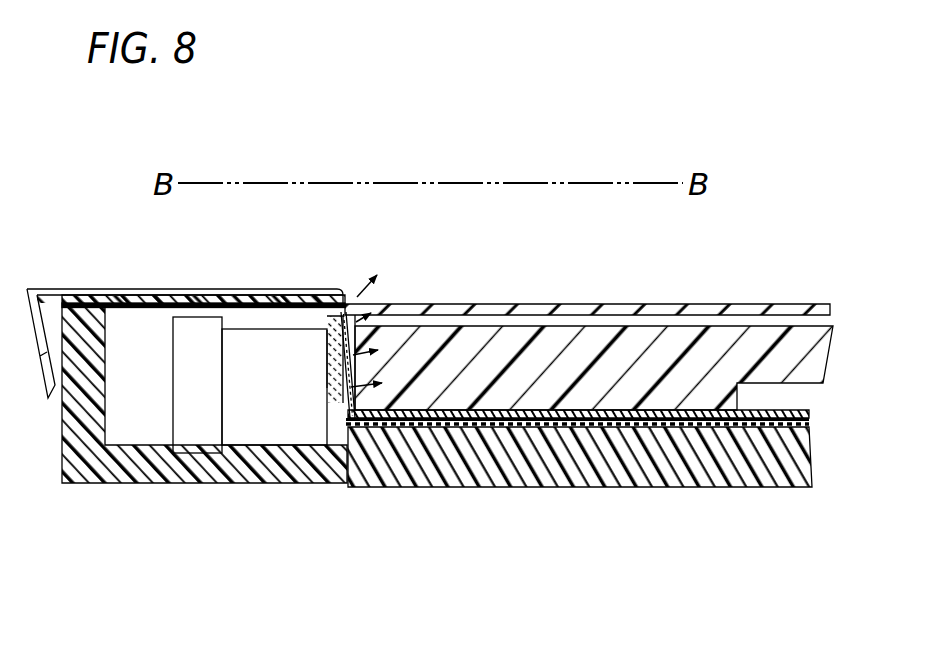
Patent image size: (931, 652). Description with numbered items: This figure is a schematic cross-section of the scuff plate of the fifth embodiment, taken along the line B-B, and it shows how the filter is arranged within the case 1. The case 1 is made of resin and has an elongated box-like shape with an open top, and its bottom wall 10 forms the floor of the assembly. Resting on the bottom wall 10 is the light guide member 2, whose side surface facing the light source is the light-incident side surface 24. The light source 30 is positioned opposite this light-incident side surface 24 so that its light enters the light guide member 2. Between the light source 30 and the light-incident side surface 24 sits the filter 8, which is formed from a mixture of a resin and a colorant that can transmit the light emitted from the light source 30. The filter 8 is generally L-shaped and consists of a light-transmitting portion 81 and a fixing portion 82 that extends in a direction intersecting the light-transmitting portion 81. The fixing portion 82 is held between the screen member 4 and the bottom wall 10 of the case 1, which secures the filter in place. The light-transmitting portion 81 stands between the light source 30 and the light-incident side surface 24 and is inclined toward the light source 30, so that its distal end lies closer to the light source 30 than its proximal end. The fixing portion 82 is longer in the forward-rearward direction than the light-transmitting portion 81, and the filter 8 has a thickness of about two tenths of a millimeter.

The case 1 is at (63, 440).
The light guide member 2 is at (635, 337).
The light-incident side surface 24 is at (390, 328).
The filter 8 is at (327, 403).
The light-transmitting portion 81 is at (325, 357).
The fixing portion 82 is at (465, 426).
The light source 30 is at (348, 405).
The screen member 4 is at (590, 417).
The bottom wall 10 is at (678, 472).